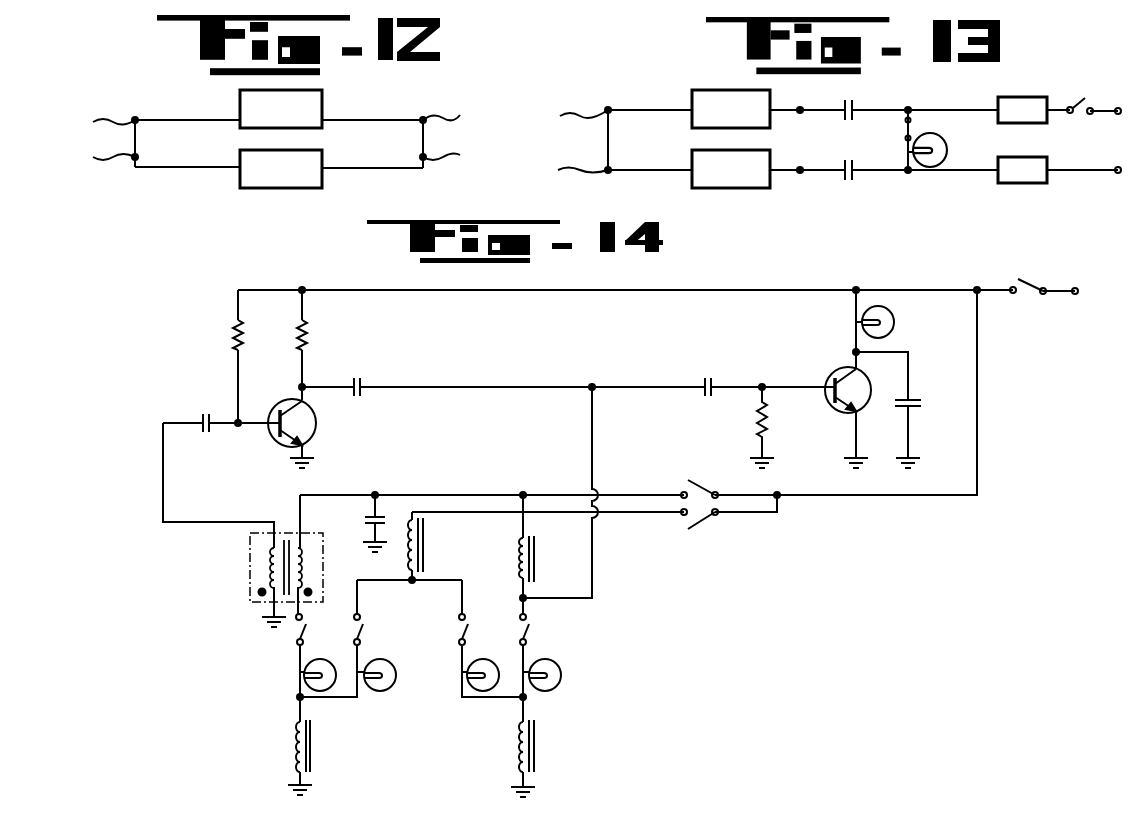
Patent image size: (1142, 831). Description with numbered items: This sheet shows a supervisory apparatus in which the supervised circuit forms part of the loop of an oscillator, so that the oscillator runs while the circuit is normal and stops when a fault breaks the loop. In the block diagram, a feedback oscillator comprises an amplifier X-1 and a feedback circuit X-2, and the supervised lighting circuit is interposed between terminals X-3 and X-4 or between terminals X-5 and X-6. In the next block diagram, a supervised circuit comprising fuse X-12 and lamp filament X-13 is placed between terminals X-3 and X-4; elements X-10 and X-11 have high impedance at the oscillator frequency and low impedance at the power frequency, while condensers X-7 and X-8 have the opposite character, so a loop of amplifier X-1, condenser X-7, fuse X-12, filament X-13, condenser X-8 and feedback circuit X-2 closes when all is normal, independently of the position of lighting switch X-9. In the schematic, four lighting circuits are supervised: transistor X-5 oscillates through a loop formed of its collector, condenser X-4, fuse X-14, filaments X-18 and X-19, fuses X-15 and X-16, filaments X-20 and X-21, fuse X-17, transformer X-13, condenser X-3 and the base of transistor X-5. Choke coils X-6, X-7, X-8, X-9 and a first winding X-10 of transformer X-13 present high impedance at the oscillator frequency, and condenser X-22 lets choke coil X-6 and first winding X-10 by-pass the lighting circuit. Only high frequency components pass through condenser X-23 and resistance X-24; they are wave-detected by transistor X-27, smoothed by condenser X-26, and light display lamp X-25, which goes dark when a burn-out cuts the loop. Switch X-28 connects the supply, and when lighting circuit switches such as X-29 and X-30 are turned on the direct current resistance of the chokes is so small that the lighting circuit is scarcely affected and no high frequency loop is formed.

In FIG. 12, the amplifier X-1 is at (312, 120).
In FIG. 13, the amplifier X-1 is at (712, 100).
In FIG. 14, the amplifier X-1 is at (302, 333).
In FIG. 12, the feedback circuit X-2 is at (248, 160).
In FIG. 13, the feedback circuit X-2 is at (730, 178).
In FIG. 14, the feedback circuit X-2 is at (238, 335).
In FIG. 12, the terminal X-3 is at (458, 118).
In FIG. 13, the terminal X-3 is at (800, 110).
In FIG. 14, the terminal X-3 is at (206, 433).
In FIG. 12, the terminal X-4 is at (458, 155).
In FIG. 13, the terminal X-4 is at (800, 170).
In FIG. 14, the terminal X-4 is at (357, 397).
In FIG. 12, the transistor X-5 is at (86, 120).
In FIG. 13, the transistor X-5 is at (563, 116).
In FIG. 14, the transistor X-5 is at (315, 436).
In FIG. 12, the choke coil X-6 is at (86, 155).
In FIG. 13, the choke coil X-6 is at (560, 169).
In FIG. 14, the choke coil X-6 is at (548, 548).
In FIG. 13, the condenser X-7 is at (848, 121).
In FIG. 14, the condenser X-7 is at (537, 745).
In FIG. 13, the condenser X-8 is at (848, 181).
In FIG. 14, the condenser X-8 is at (451, 538).
In FIG. 13, the lighting switch X-9 is at (1087, 100).
In FIG. 14, the lighting switch X-9 is at (311, 746).
In FIG. 13, the first winding of transformer X-10 is at (1025, 105).
In FIG. 14, the first winding of transformer X-10 is at (305, 560).
In FIG. 13, the electrical element having high impedance at oscillator frequency X-11 is at (1025, 183).
In FIG. 13, the fuse X-12 is at (918, 140).
In FIG. 14, the fuse X-12 is at (265, 575).
In FIG. 13, the transformer X-13 is at (948, 150).
In FIG. 14, the transformer X-13 is at (262, 555).
In FIG. 14, the fuse X-14 is at (529, 624).
In FIG. 14, the fuse X-15 is at (468, 624).
In FIG. 14, the fuse X-16 is at (363, 624).
In FIG. 14, the fuse X-17 is at (306, 624).
In FIG. 14, the filament X-18 is at (561, 675).
In FIG. 14, the filament X-19 is at (483, 692).
In FIG. 14, the filament X-20 is at (409, 673).
In FIG. 14, the filament X-21 is at (303, 672).
In FIG. 14, the condenser X-22 is at (365, 520).
In FIG. 14, the condenser X-23 is at (708, 378).
In FIG. 14, the resistance X-24 is at (760, 418).
In FIG. 14, the display lamp X-25 is at (920, 322).
In FIG. 14, the condenser X-26 is at (940, 398).
In FIG. 14, the transistor X-27 is at (827, 385).
In FIG. 14, the power switch X-28 is at (1029, 278).
In FIG. 14, the switch X-29 is at (700, 468).
In FIG. 14, the lighting circuit switch X-30 is at (704, 522).